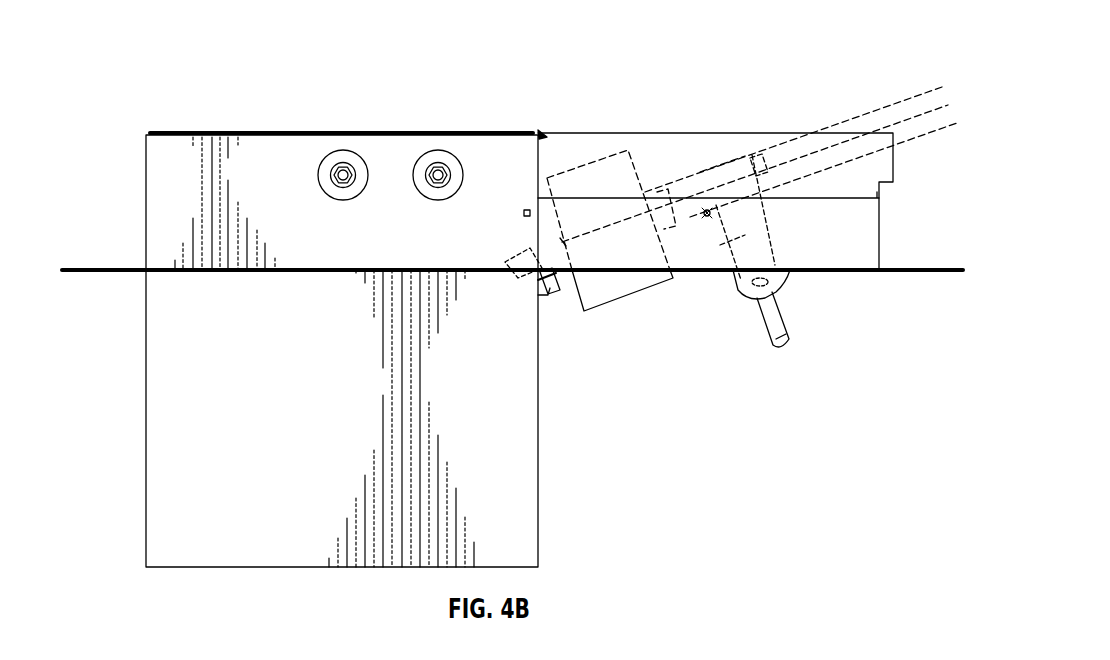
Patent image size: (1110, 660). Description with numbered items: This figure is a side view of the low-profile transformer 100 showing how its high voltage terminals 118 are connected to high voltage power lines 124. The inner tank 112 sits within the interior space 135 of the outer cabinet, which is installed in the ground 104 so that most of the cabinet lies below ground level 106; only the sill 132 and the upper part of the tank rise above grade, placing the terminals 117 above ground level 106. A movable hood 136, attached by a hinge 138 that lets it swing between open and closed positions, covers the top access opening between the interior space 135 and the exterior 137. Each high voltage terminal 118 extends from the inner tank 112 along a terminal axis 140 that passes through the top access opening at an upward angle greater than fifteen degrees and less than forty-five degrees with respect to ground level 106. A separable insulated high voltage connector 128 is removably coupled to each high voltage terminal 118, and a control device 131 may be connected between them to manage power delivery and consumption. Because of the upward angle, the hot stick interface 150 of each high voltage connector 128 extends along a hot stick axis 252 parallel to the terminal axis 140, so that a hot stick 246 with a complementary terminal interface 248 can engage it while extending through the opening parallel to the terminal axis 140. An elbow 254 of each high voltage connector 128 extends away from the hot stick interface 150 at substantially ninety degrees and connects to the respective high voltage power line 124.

The low-profile transformer 100 is at (90, 137).
The ground 104 is at (118, 323).
The ground level 106 is at (943, 262).
The inner tank 112 is at (162, 217).
The terminals 117 is at (541, 288).
The high voltage terminals 118 is at (518, 263).
The high voltage power line 124 is at (762, 317).
The separable insulated high voltage connector 128 is at (713, 168).
The control device 131 is at (588, 172).
The sill 132 is at (867, 218).
The interior space 135 is at (640, 405).
The movable hood 136 is at (777, 140).
The exterior 137 is at (692, 107).
The hinge 138 is at (543, 133).
The terminal axis 140 is at (572, 243).
The hot stick interface 150 is at (753, 158).
The hot stick 246 is at (912, 97).
The terminal interface 248 is at (771, 180).
The hot stick axis 252 is at (903, 120).
The elbow 254 is at (731, 238).